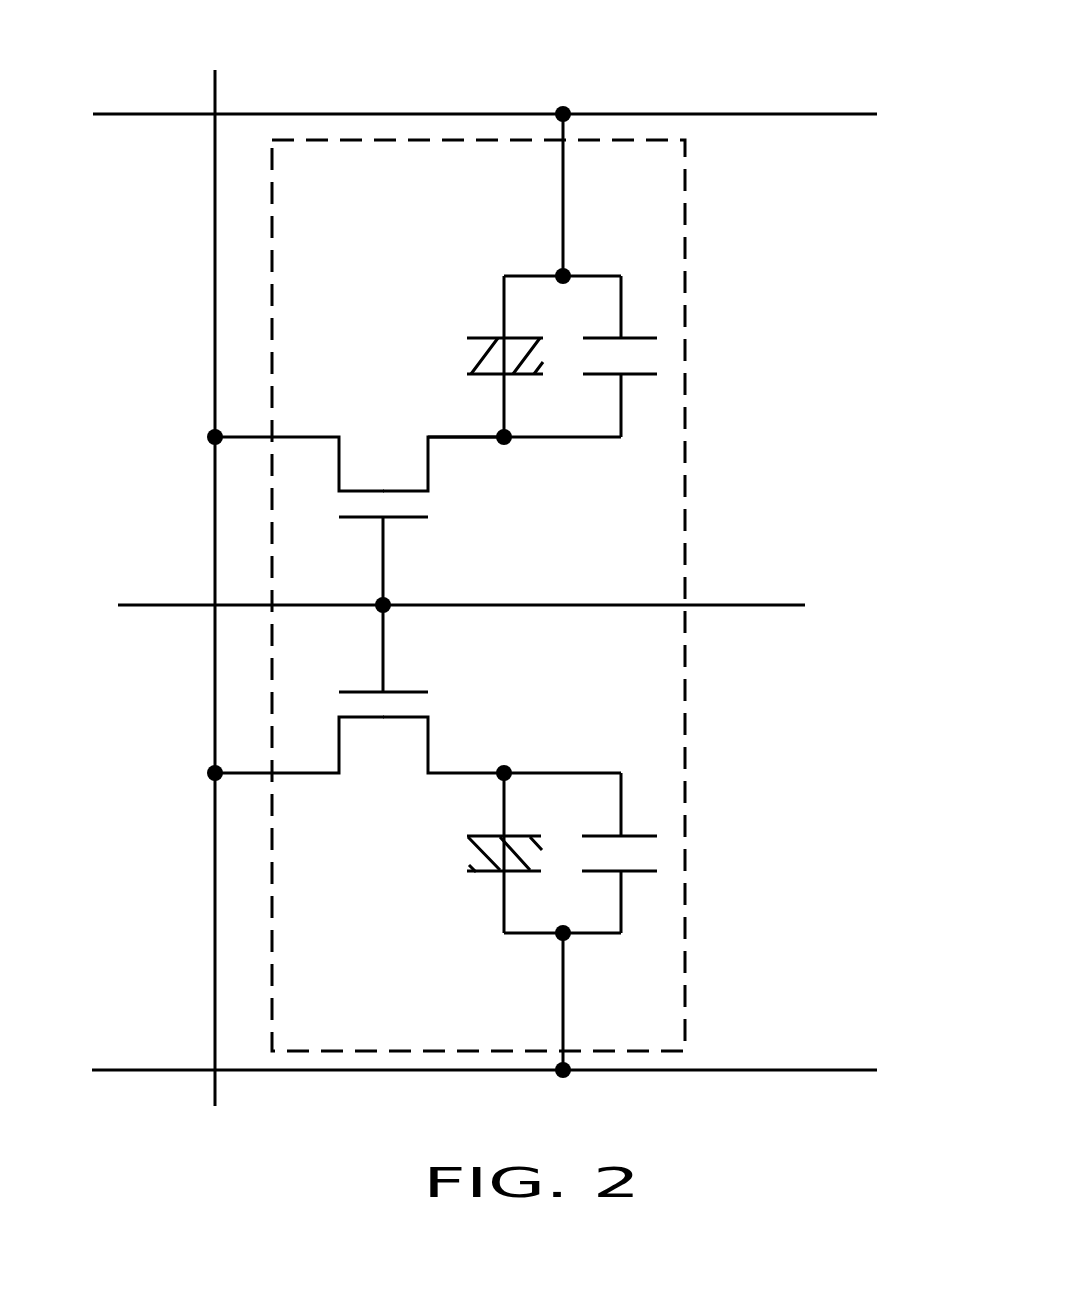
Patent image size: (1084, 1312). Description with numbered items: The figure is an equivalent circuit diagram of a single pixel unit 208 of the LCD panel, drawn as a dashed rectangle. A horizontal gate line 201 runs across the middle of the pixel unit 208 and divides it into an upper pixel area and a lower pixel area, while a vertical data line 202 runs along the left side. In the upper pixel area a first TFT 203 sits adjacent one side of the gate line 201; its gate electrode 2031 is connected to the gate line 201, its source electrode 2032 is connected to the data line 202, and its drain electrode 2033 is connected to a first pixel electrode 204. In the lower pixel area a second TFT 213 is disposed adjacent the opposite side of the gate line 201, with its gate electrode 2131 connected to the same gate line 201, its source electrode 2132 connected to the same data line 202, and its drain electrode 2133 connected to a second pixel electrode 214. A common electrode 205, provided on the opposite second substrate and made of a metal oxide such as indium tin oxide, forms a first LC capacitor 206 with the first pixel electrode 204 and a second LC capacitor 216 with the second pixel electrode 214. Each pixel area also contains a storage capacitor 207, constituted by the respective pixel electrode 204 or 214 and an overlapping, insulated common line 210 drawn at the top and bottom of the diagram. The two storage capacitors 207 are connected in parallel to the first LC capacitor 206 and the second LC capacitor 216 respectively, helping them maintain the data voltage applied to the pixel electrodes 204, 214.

The gate line 201 is at (727, 605).
The data line 202 is at (213, 665).
The first TFT 203 is at (350, 490).
The gate electrode of the first TFT 2031 is at (383, 543).
The source electrode of the first TFT 2032 is at (339, 465).
The drain electrode of the first TFT 2033 is at (428, 465).
The first pixel electrode 204 is at (487, 375).
The common electrode 205 is at (369, 583).
The first LC capacitor 206 is at (473, 357).
The storage capacitor 207 is at (640, 361).
The pixel unit 208 is at (685, 935).
The common line 210 is at (762, 114).
The second TFT 213 is at (466, 725).
The gate electrode of the second TFT 2131 is at (383, 662).
The source electrode of the second TFT 2132 is at (339, 745).
The drain electrode of the second TFT 2133 is at (428, 745).
The second pixel electrode 214 is at (483, 837).
The second LC capacitor 216 is at (460, 848).